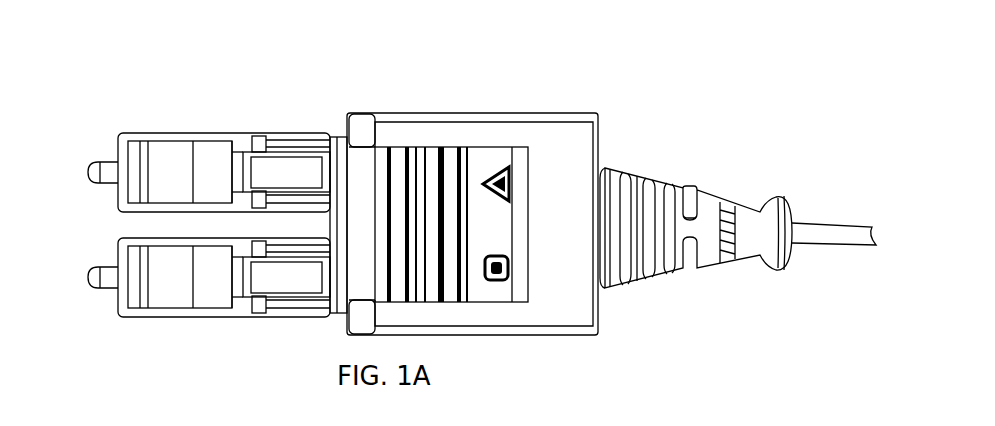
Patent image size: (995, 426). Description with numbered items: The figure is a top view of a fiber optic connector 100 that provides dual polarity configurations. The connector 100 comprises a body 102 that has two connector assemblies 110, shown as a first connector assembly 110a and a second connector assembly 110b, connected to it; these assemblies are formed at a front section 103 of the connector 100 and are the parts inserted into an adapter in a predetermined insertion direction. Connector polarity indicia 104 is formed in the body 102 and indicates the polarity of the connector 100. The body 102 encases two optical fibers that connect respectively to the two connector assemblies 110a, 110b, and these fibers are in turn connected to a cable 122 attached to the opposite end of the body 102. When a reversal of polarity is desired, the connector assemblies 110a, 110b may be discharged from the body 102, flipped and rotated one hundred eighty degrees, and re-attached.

The fiber optic connector 100 is at (536, 81).
The body 102 is at (565, 257).
The front section 103 is at (363, 133).
The connector polarity indicia 104 is at (510, 220).
The connector assemblies 110 is at (102, 129).
The first connector assembly 110a is at (140, 153).
The second connector assembly 110b is at (160, 296).
The cable 122 is at (665, 185).